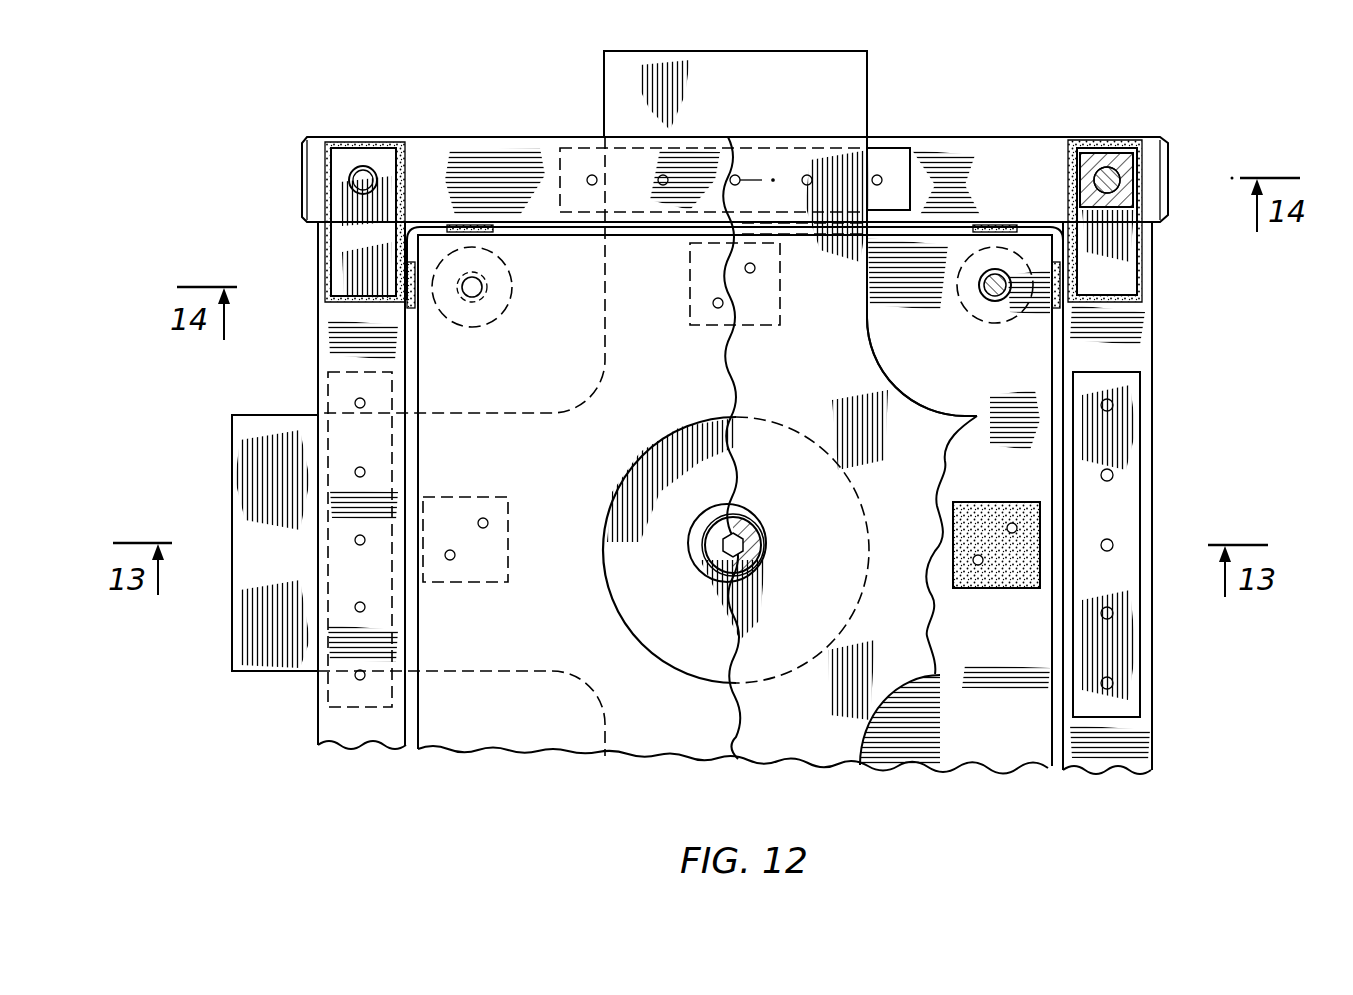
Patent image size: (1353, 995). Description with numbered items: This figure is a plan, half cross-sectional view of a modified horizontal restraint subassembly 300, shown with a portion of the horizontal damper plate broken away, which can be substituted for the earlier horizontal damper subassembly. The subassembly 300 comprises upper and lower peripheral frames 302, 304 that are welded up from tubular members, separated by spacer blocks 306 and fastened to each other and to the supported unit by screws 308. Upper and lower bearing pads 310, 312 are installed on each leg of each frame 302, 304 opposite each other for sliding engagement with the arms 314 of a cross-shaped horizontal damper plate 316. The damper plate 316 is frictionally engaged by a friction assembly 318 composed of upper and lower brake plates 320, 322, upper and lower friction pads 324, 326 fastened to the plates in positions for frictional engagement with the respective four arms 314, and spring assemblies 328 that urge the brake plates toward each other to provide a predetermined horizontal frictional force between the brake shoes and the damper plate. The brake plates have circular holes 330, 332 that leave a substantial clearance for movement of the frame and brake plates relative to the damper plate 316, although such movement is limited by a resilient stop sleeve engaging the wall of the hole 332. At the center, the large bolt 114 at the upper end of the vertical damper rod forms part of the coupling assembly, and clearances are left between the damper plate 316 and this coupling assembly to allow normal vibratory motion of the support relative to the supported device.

The horizontal restraint subassembly 300 is at (1024, 86).
The upper peripheral frame 302 is at (437, 155).
The lower peripheral frame 304 is at (1130, 348).
The spacer block 306 is at (1098, 155).
The screw 308 is at (1113, 173).
The upper bearing pad 310 is at (580, 146).
The lower bearing pad 312 is at (890, 148).
The arm 314 is at (862, 62).
The horizontal damper plate 316 is at (890, 370).
The friction assembly 318 is at (528, 755).
The upper brake plate 320 is at (530, 396).
The lower brake plate 322 is at (1015, 746).
The upper friction pad 324 is at (718, 328).
The lower friction pad 326 is at (1003, 578).
The spring assembly 328 is at (505, 324).
The circular hole 330 is at (625, 603).
The circular hole 332 is at (765, 430).
The bolt 114 is at (738, 582).